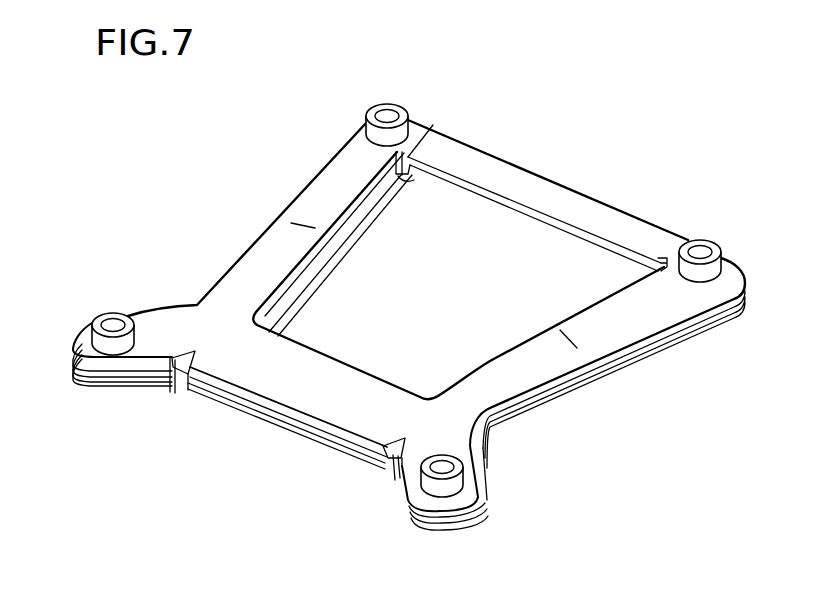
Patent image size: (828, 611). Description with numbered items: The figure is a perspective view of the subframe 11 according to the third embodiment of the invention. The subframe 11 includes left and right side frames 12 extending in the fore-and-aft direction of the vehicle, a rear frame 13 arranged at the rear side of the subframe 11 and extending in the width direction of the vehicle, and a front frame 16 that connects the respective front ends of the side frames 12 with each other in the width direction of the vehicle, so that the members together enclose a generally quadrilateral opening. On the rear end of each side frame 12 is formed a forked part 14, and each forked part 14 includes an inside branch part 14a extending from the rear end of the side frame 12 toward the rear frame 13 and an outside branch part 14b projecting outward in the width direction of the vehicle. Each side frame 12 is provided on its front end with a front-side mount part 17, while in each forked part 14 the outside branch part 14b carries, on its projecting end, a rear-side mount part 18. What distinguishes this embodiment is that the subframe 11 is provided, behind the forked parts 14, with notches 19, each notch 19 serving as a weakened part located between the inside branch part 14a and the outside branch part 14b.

The subframe 11 is at (299, 164).
The side frame 12 is at (277, 243).
The rear frame 13 is at (315, 377).
The forked part 14 is at (206, 335).
The inside branch part 14a is at (250, 355).
The outside branch part 14b is at (137, 352).
The front frame 16 is at (552, 195).
The front-side mount part 17 is at (406, 110).
The rear-side mount part 18 is at (99, 312).
The notch 19 is at (168, 390).